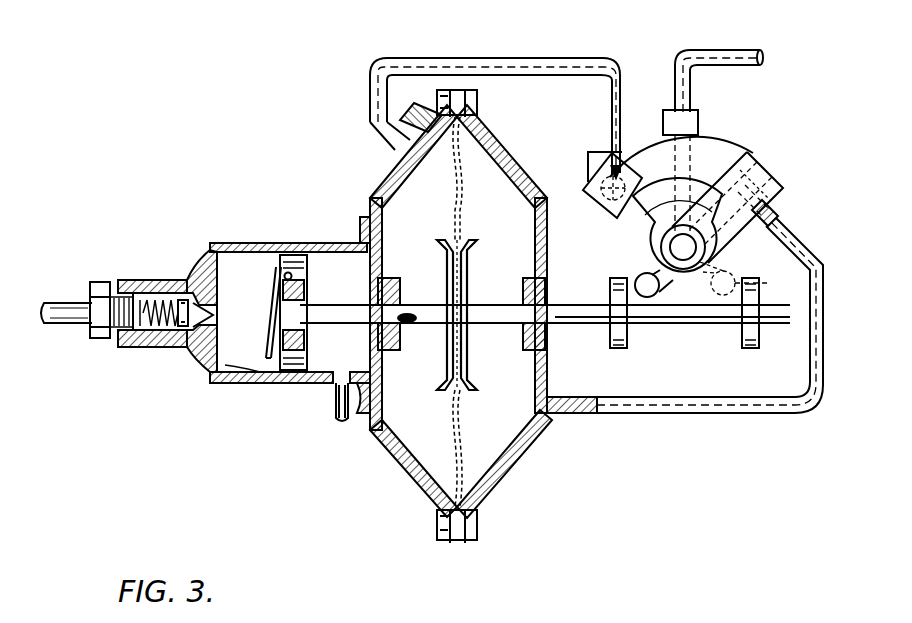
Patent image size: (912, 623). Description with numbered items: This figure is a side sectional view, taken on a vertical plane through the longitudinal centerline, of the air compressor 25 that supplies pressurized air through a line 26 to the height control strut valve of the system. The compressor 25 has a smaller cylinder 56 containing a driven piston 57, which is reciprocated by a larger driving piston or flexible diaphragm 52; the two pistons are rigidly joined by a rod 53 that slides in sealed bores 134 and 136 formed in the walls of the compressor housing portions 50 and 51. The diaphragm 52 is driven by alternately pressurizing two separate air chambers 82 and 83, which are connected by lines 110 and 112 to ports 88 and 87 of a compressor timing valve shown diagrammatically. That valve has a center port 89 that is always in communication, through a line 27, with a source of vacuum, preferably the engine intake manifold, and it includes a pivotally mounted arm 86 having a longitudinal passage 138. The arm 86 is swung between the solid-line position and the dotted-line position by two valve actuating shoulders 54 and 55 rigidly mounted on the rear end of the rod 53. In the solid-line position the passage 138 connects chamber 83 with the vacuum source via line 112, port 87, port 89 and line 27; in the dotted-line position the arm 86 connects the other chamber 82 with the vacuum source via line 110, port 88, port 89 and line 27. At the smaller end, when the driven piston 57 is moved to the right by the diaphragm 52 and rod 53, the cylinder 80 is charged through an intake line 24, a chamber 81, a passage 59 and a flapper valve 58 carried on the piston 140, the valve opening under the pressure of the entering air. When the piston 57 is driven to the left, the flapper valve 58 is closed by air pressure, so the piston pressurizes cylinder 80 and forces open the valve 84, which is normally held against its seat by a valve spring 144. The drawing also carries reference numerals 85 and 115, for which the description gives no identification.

The intake line 24 is at (336, 405).
The air compressor 25 is at (362, 178).
The line 26 is at (60, 303).
The line 27 is at (742, 52).
The compressor housing portion 50 is at (520, 157).
The compressor housing portion 51 is at (397, 163).
The driving piston or flexible diaphragm 52 is at (456, 210).
The rod 53 is at (483, 323).
The valve actuating shoulder 54 is at (612, 348).
The valve actuating shoulder 55 is at (757, 348).
The smaller cylinder 56 is at (300, 383).
The driven piston 57 is at (233, 383).
The flapper valve 58 is at (262, 295).
The passage 59 is at (267, 352).
The cylinder 80 is at (230, 270).
The chamber 81 is at (330, 265).
The air chamber 82 is at (423, 433).
The air chamber 83 is at (483, 440).
The valve 84 is at (187, 340).
The cam housing 85 is at (732, 142).
The pivotally mounted arm 86 is at (640, 224).
The port 87 is at (785, 188).
The port 88 is at (605, 183).
The center port 89 is at (692, 248).
The line 110 is at (485, 70).
The line 112 is at (692, 410).
The roller 115 is at (643, 272).
The sealed bore 134 is at (550, 312).
The sealed bore 136 is at (417, 323).
The longitudinal passage 138 is at (778, 222).
The piston 140 is at (307, 277).
The valve spring 144 is at (142, 328).